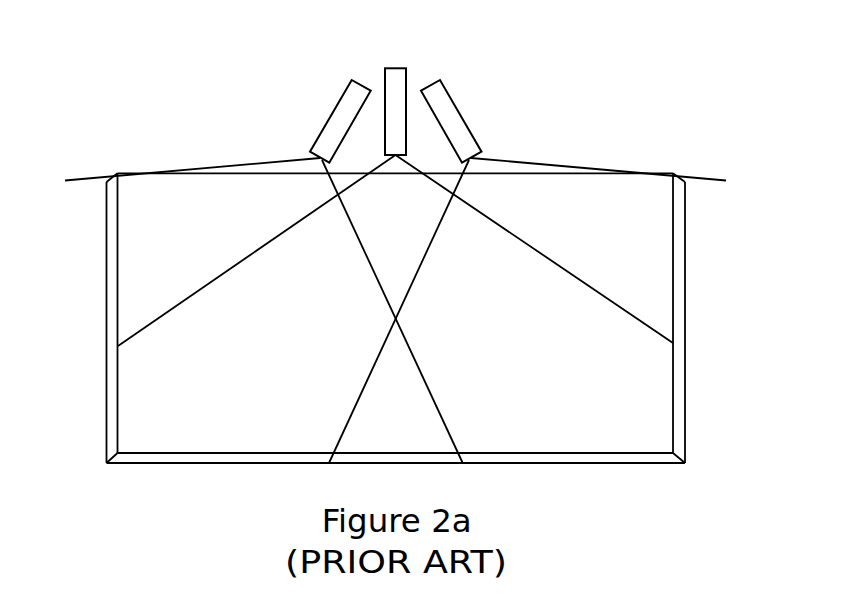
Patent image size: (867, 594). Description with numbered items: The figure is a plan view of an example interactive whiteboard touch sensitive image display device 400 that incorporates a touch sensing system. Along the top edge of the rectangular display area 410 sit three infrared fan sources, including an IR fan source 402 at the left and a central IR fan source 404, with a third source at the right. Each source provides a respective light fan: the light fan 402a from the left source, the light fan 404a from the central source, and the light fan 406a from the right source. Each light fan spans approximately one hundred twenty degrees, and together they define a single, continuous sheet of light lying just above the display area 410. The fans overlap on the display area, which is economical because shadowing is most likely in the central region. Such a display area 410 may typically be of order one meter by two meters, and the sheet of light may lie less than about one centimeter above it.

The interactive whiteboard touch sensitive image display device 400 is at (102, 520).
The IR fan source 402 is at (330, 118).
The light fan 402a is at (158, 172).
The IR fan source 404 is at (395, 68).
The light fan 404a is at (227, 272).
The light fan 406a is at (703, 178).
The display area 410 is at (604, 430).